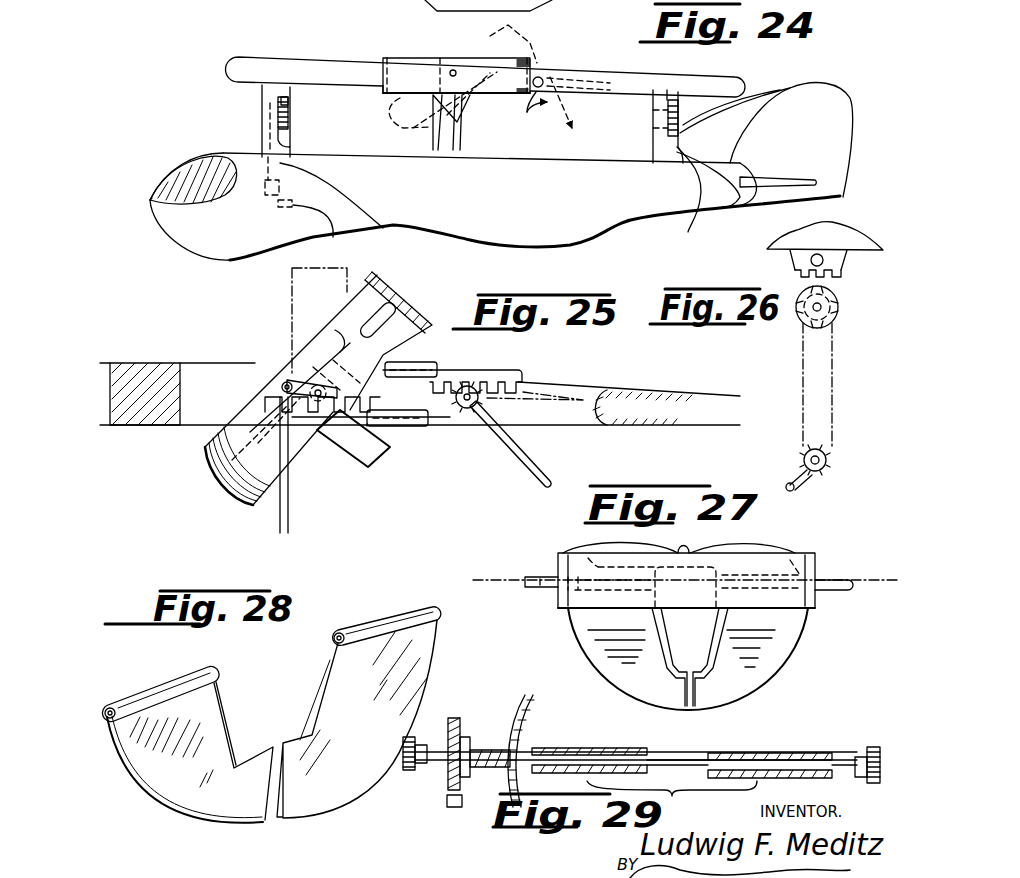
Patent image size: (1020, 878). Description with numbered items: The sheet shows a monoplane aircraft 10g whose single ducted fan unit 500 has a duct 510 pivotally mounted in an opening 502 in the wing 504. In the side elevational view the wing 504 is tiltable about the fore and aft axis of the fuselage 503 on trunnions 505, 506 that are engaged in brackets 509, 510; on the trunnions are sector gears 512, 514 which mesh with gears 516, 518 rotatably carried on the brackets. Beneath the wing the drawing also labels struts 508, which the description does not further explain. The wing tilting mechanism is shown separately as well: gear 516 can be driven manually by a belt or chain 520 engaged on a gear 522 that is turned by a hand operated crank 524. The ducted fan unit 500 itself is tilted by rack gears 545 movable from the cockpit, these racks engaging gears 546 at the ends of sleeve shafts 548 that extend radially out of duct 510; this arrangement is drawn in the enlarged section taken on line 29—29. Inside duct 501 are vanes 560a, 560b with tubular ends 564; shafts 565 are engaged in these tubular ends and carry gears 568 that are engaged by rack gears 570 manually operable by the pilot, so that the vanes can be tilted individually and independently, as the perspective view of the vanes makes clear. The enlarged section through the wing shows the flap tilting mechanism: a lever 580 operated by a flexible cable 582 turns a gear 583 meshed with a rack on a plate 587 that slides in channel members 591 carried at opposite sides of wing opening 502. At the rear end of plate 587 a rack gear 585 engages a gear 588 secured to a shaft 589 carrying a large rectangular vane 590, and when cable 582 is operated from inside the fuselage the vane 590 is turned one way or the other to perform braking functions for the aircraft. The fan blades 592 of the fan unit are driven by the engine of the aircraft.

In FIG. 24, the aircraft 10g is at (183, 152).
In FIG. 25, the aircraft 10g is at (210, 472).
In FIG. 27, the section line 29 is at (483, 576).
In FIG. 24, the ducted fan unit 500 is at (472, 33).
In FIG. 24, the duct 501 is at (388, 58).
In FIG. 27, the duct 501 is at (767, 597).
In FIG. 29, the duct 501 is at (533, 712).
In FIG. 25, the wing opening 502 is at (237, 383).
In FIG. 24, the fuselage 503 is at (210, 222).
In FIG. 24, the wing 504 is at (253, 72).
In FIG. 26, the wing 504 is at (837, 231).
In FIG. 25, the wing 504 is at (123, 392).
In FIG. 24, the trunnion 505 is at (262, 97).
In FIG. 24, the trunnion 506 is at (660, 100).
In FIG. 24, the struts 508 is at (453, 135).
In FIG. 24, the bracket 509 is at (290, 147).
In FIG. 26, the bracket 509 is at (823, 262).
In FIG. 24, the duct 510 is at (690, 228).
In FIG. 24, the sector gear 512 is at (290, 104).
In FIG. 26, the sector gear 512 is at (837, 280).
In FIG. 24, the sector gear 514 is at (748, 110).
In FIG. 24, the gear 516 is at (281, 115).
In FIG. 26, the gear 516 is at (840, 308).
In FIG. 24, the gear 518 is at (800, 83).
In FIG. 24, the belt or chain 520 is at (362, 222).
In FIG. 26, the belt or chain 520 is at (802, 361).
In FIG. 24, the gear 522 is at (158, 201).
In FIG. 26, the gear 522 is at (867, 427).
In FIG. 24, the hand operated crank 524 is at (333, 229).
In FIG. 26, the hand operated crank 524 is at (812, 491).
In FIG. 29, the rack gear 545 is at (450, 807).
In FIG. 29, the gear 546 is at (458, 720).
In FIG. 29, the sleeve shaft 548 is at (487, 747).
In FIG. 27, the vane 560a is at (645, 680).
In FIG. 28, the vane 560a is at (240, 807).
In FIG. 27, the vane 560b is at (743, 667).
In FIG. 28, the vane 560b is at (307, 790).
In FIG. 27, the tubular end 564 is at (598, 588).
In FIG. 28, the tubular end 564 is at (330, 633).
In FIG. 29, the tubular end 564 is at (627, 730).
In FIG. 27, the shaft 565 is at (532, 587).
In FIG. 29, the shaft 565 is at (707, 765).
In FIG. 29, the gear 568 is at (408, 733).
In FIG. 29, the rack gear 570 is at (407, 773).
In FIG. 25, the lever 580 is at (303, 378).
In FIG. 25, the flexible cable 582 is at (280, 512).
In FIG. 25, the gear 583 is at (300, 378).
In FIG. 25, the rack gear 585 is at (495, 352).
In FIG. 25, the plate 587 is at (403, 388).
In FIG. 25, the gear 588 is at (481, 391).
In FIG. 25, the shaft 589 is at (468, 412).
In FIG. 24, the large rectangular vane 590 is at (542, 79).
In FIG. 25, the large rectangular vane 590 is at (508, 447).
In FIG. 25, the channel member 591 is at (425, 427).
In FIG. 25, the fan blades 592 is at (378, 302).
In FIG. 27, the fan blades 592 is at (770, 550).